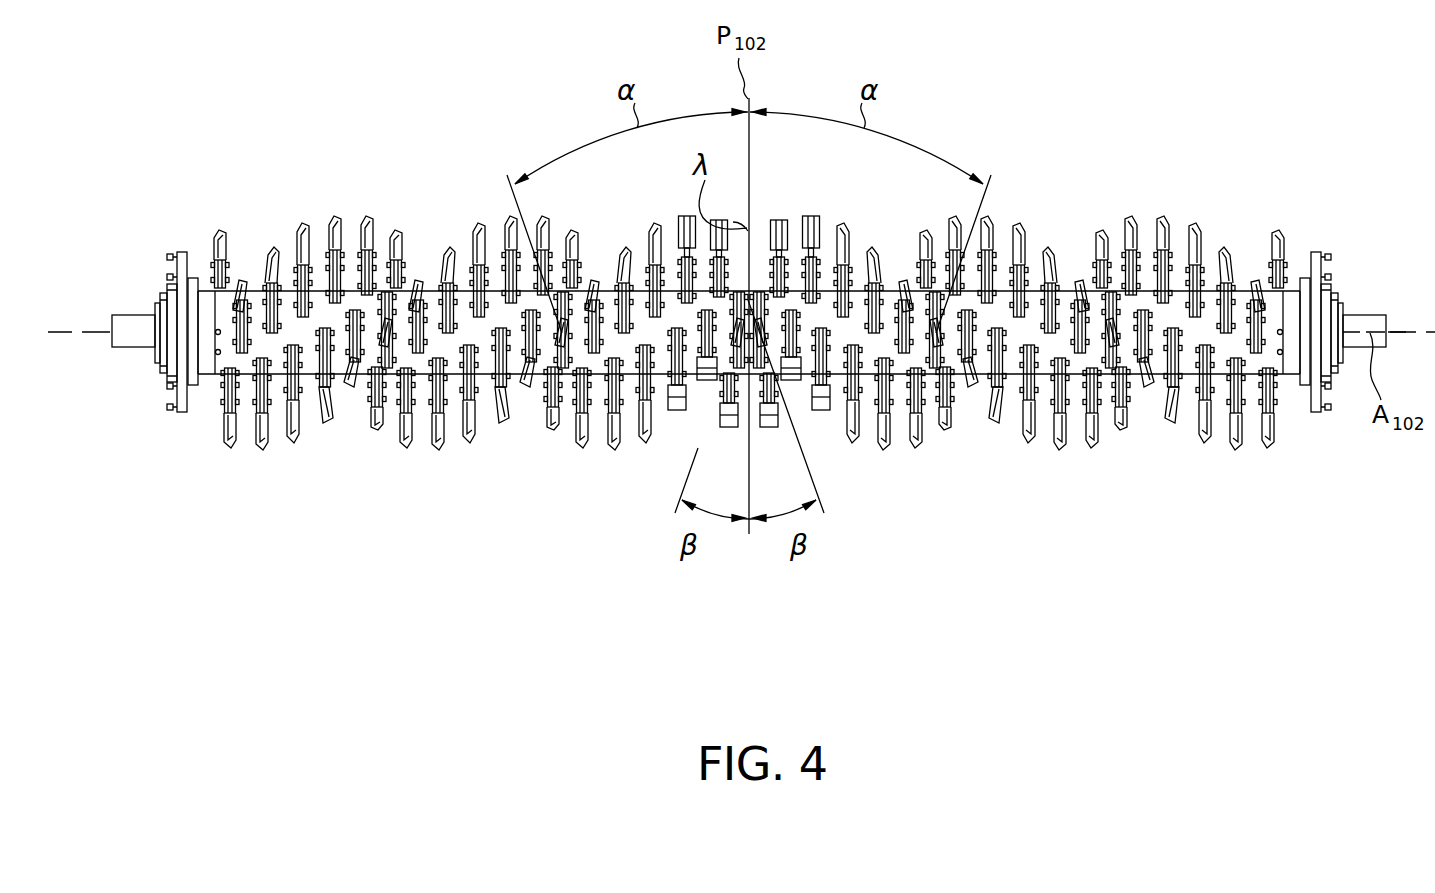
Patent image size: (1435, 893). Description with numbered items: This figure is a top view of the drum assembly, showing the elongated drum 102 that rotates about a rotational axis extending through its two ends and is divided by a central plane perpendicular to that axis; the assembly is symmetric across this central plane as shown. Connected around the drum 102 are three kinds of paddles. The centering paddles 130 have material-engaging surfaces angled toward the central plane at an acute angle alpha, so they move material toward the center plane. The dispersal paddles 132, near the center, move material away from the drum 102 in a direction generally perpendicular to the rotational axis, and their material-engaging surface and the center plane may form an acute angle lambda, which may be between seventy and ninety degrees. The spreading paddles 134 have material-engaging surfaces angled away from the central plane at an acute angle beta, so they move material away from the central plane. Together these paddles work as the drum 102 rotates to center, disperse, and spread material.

The drum 102 is at (1203, 332).
The centering paddles 130 is at (395, 232).
The dispersal paddles 132 is at (673, 394).
The spreading paddles 134 is at (757, 335).